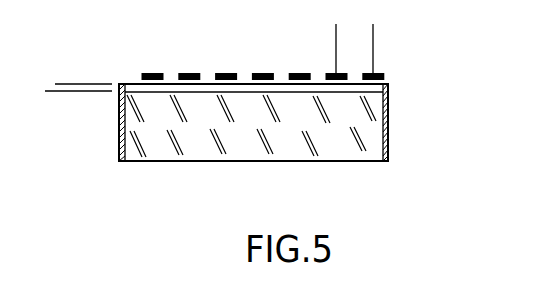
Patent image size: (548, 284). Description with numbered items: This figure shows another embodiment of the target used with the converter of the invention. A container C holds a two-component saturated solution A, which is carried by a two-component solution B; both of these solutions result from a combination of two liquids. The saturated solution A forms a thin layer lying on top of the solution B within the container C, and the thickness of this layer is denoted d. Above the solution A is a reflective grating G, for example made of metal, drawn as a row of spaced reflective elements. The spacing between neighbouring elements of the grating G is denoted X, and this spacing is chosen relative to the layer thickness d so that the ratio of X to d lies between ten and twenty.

The thickness of the layer of solution A d is at (72, 112).
The spacing of the grating X is at (388, 33).
The reflective grating G is at (379, 74).
The two-component saturated solution A is at (377, 91).
The container C is at (385, 123).
The two-component solution B is at (367, 152).